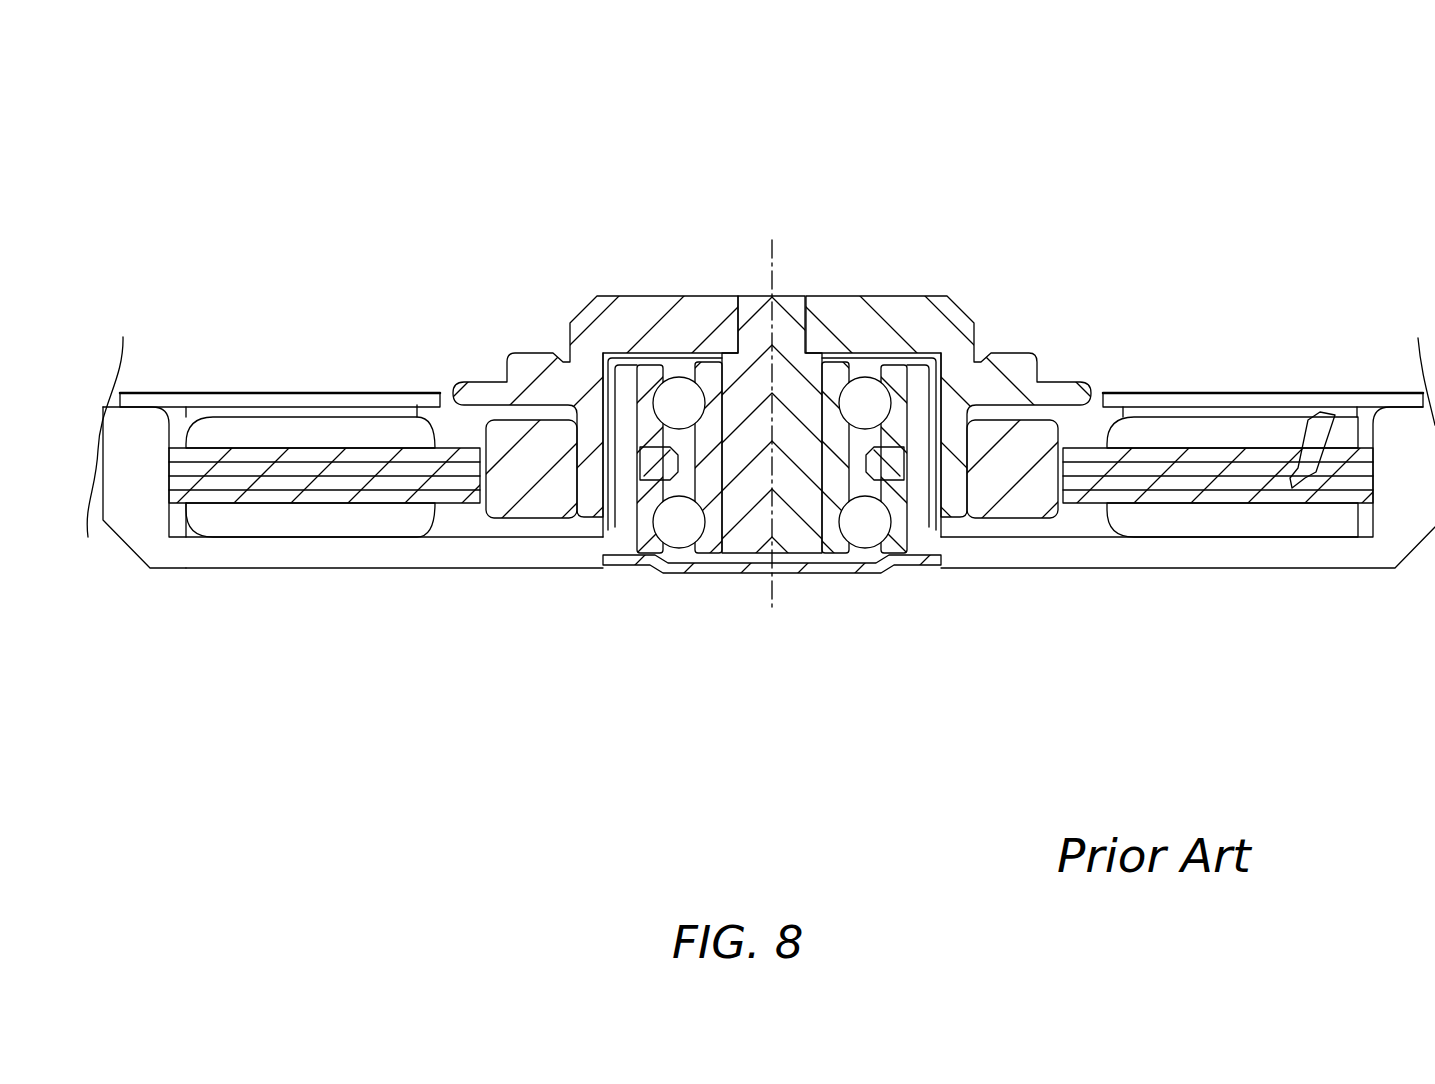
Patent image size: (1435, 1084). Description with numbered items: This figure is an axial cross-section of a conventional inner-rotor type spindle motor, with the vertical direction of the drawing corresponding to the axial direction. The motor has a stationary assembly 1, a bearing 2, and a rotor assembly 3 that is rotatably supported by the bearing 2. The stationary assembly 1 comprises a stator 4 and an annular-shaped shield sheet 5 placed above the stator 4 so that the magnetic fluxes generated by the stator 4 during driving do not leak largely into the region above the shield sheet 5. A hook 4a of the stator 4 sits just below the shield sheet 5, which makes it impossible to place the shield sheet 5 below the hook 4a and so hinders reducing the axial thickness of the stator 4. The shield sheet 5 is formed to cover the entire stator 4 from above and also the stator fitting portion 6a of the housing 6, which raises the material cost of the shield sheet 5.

The stationary assembly 1 is at (761, 440).
The bearing 2 is at (740, 588).
The rotor assembly 3 is at (802, 248).
The stator 4 is at (792, 460).
The hook 4a is at (1320, 412).
The shield sheet 5 is at (1173, 397).
The housing 6 is at (769, 473).
The stator fitting portion 6a is at (152, 437).